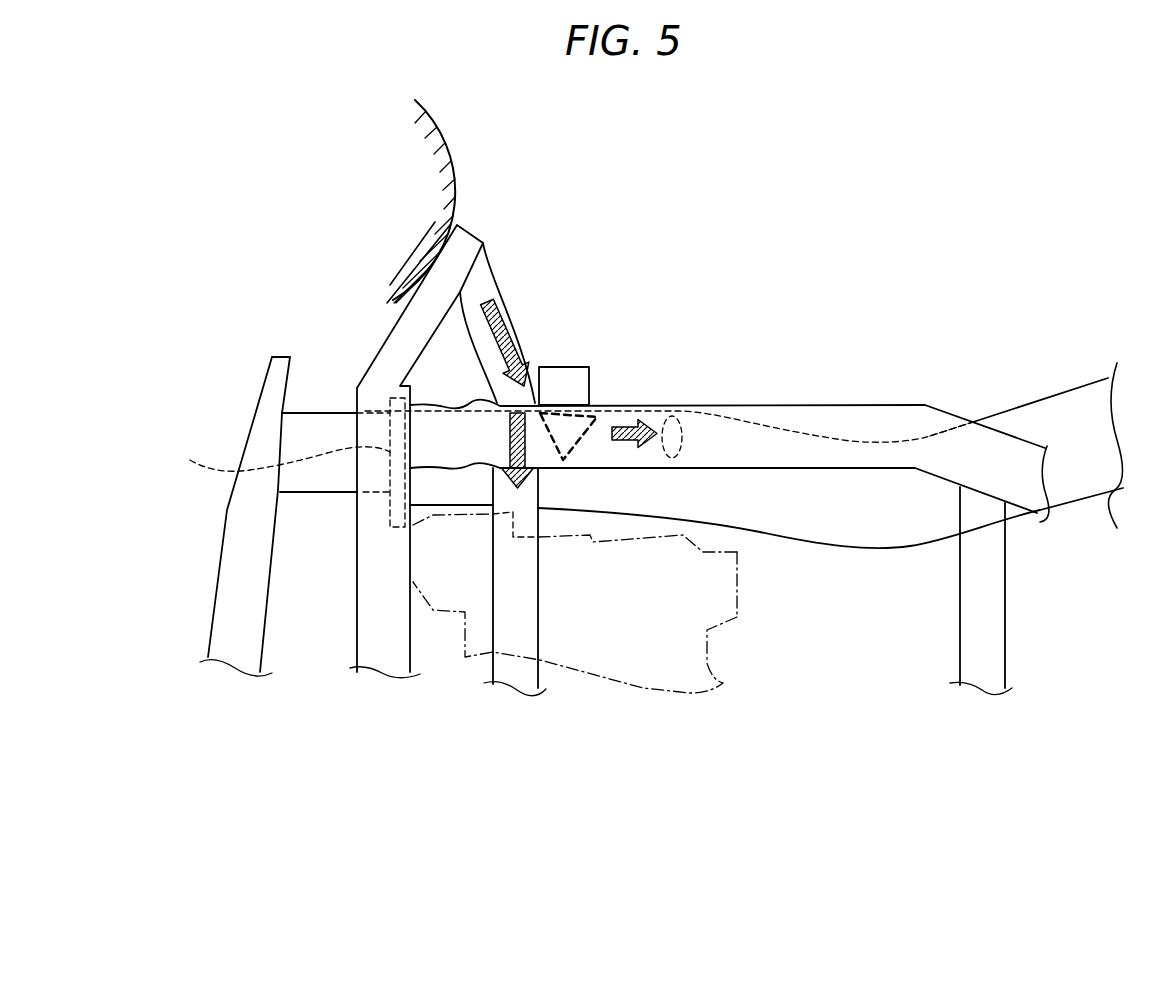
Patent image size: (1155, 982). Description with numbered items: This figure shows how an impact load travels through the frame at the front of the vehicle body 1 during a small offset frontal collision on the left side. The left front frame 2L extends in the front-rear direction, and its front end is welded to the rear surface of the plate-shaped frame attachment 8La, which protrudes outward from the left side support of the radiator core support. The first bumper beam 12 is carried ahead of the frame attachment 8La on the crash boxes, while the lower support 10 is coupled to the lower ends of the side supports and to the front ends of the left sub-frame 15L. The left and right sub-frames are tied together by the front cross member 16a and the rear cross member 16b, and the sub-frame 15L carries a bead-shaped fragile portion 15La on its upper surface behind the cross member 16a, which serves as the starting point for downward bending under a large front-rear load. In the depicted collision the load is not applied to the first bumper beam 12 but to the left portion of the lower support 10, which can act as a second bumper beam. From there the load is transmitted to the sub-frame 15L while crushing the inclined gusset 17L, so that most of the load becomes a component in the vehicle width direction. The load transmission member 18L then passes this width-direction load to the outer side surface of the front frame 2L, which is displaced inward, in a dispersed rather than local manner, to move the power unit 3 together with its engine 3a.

The vehicle body 1 is at (163, 384).
The left front frame 2L is at (780, 405).
The power unit 3 is at (765, 652).
The engine 3a is at (737, 577).
The frame attachment 8La is at (272, 462).
The lower support 10 is at (357, 578).
The first bumper beam 12 is at (226, 513).
The left sub-frame 15L is at (932, 435).
The fragile portion 15La is at (680, 410).
The front cross member 16a is at (540, 593).
The rear cross member 16b is at (1007, 626).
The gusset 17L is at (502, 287).
The load transmission member 18L is at (566, 367).